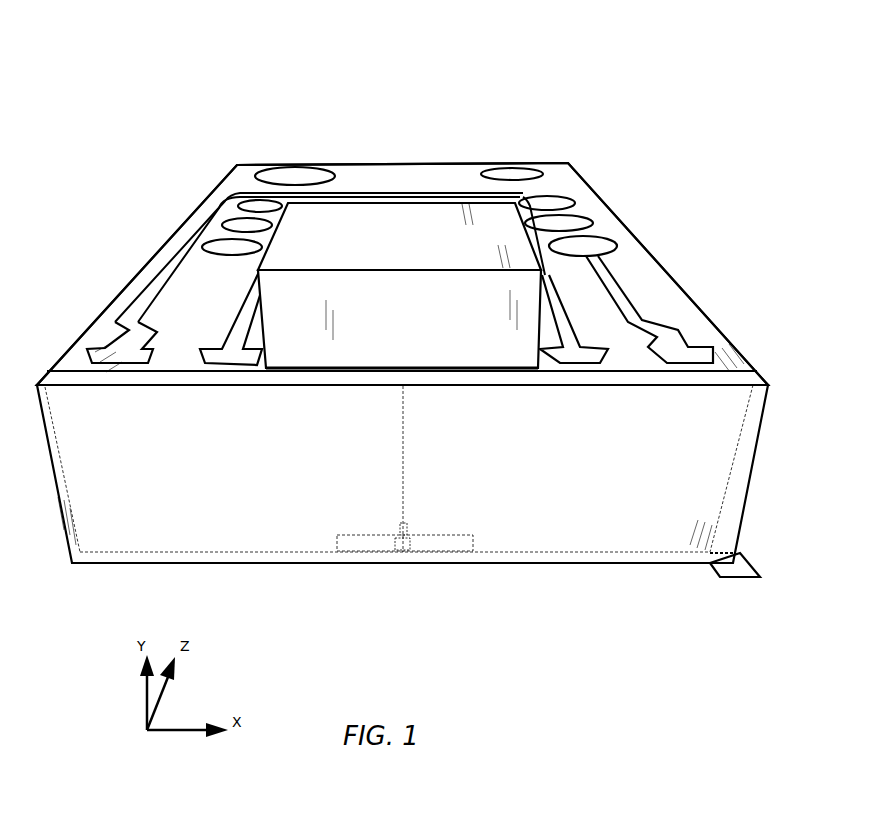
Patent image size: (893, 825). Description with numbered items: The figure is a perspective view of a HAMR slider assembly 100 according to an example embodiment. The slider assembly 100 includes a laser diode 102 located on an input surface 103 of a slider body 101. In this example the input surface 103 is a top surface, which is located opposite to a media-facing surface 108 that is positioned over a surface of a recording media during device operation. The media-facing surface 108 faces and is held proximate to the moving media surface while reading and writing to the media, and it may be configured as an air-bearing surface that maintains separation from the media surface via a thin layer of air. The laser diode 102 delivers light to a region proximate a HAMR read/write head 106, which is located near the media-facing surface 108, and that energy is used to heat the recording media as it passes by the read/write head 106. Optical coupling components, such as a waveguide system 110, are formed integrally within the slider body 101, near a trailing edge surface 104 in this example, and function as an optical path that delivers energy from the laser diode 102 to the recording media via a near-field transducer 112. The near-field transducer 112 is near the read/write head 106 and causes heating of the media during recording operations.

The HAMR slider assembly 100 is at (582, 110).
The slider body 101 is at (212, 190).
The laser diode 102 is at (362, 212).
The input surface 103 is at (98, 332).
The trailing edge surface 104 is at (130, 542).
The HAMR read/write head 106 is at (408, 550).
The media-facing surface 108 is at (748, 577).
The waveguide system 110 is at (403, 450).
The near-field transducer 112 is at (402, 552).